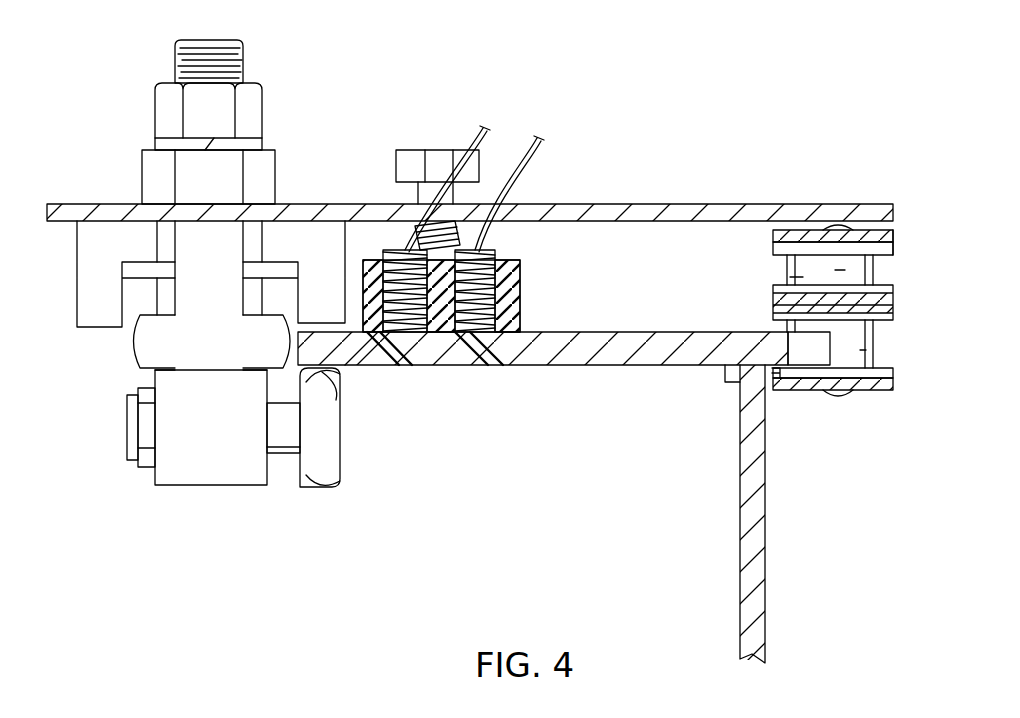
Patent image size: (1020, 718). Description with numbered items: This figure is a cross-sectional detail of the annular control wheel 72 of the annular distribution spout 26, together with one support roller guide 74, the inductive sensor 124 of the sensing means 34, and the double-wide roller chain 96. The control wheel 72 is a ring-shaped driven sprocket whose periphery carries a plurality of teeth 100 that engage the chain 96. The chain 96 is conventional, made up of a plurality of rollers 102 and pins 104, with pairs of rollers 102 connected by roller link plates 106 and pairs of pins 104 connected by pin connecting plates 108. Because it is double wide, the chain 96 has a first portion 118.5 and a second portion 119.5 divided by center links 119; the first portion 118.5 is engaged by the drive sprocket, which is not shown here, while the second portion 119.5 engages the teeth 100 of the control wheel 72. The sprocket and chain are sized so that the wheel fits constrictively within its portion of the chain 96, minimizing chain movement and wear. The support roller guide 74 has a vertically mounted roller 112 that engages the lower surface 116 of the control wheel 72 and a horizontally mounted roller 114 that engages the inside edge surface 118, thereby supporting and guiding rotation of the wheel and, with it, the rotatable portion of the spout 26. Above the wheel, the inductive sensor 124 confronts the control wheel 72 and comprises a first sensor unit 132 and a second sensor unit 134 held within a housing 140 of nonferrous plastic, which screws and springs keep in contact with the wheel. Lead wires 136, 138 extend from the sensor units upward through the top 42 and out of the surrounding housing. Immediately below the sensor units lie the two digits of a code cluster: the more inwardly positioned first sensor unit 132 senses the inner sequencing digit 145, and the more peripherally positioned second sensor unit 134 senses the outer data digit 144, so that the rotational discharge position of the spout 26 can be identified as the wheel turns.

The annular distribution spout 26 is at (765, 552).
The sensing means 34 is at (500, 113).
The top 42 is at (628, 204).
The control wheel 72 is at (648, 366).
The support roller guide 74 is at (243, 44).
The double-wide roller chain 96 is at (878, 393).
The teeth 100 is at (813, 343).
The rollers 102 is at (803, 278).
The pins 104 is at (836, 396).
The roller link plates 106 is at (775, 248).
The pin connecting plates 108 is at (790, 233).
The vertically mounted roller 112 is at (318, 488).
The horizontally mounted roller 114 is at (128, 358).
The lower surface 116 is at (362, 367).
The inside edge surface 118 is at (297, 346).
The first portion 118.5 is at (840, 272).
The center links 119 is at (893, 290).
The second portion 119.5 is at (862, 355).
The inductive sensor 124 is at (502, 250).
The first sensor unit 132 is at (437, 332).
The second sensor unit 134 is at (505, 282).
The lead wire 136 is at (466, 136).
The lead wire 138 is at (531, 140).
The housing 140 is at (383, 272).
The data digit 144 is at (482, 366).
The sequencing digit 145 is at (405, 348).